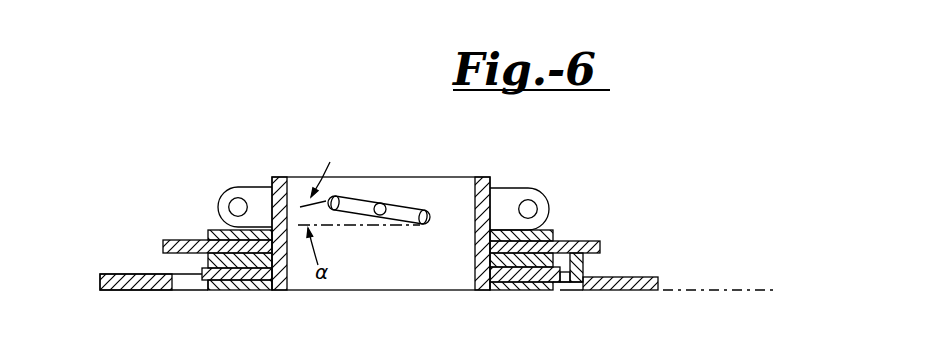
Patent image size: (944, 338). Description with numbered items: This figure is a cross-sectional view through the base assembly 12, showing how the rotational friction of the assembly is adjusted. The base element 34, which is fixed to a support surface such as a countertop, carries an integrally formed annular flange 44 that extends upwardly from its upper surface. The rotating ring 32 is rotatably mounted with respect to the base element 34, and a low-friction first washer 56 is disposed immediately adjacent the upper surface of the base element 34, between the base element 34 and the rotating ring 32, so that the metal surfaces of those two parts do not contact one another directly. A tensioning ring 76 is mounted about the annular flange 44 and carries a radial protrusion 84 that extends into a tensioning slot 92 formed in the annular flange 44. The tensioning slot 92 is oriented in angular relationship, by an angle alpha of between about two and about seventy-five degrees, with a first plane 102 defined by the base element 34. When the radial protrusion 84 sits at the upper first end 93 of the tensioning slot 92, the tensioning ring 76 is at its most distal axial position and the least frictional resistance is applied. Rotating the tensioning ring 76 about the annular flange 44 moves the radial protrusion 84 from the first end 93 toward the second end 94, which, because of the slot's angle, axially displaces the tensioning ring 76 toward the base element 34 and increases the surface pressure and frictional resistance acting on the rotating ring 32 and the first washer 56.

The base assembly 12 is at (555, 188).
The rotating ring 32 is at (577, 241).
The base element 34 is at (627, 277).
The annular flange 44 is at (483, 177).
The first washer 56 is at (210, 262).
The tensioning ring 76 is at (232, 187).
The radial protrusion 84 is at (383, 203).
The tensioning slot 92 is at (407, 210).
The first end of tensioning slot 93 is at (345, 197).
The second end of tensioning slot 94 is at (413, 225).
The first plane 102 is at (752, 290).